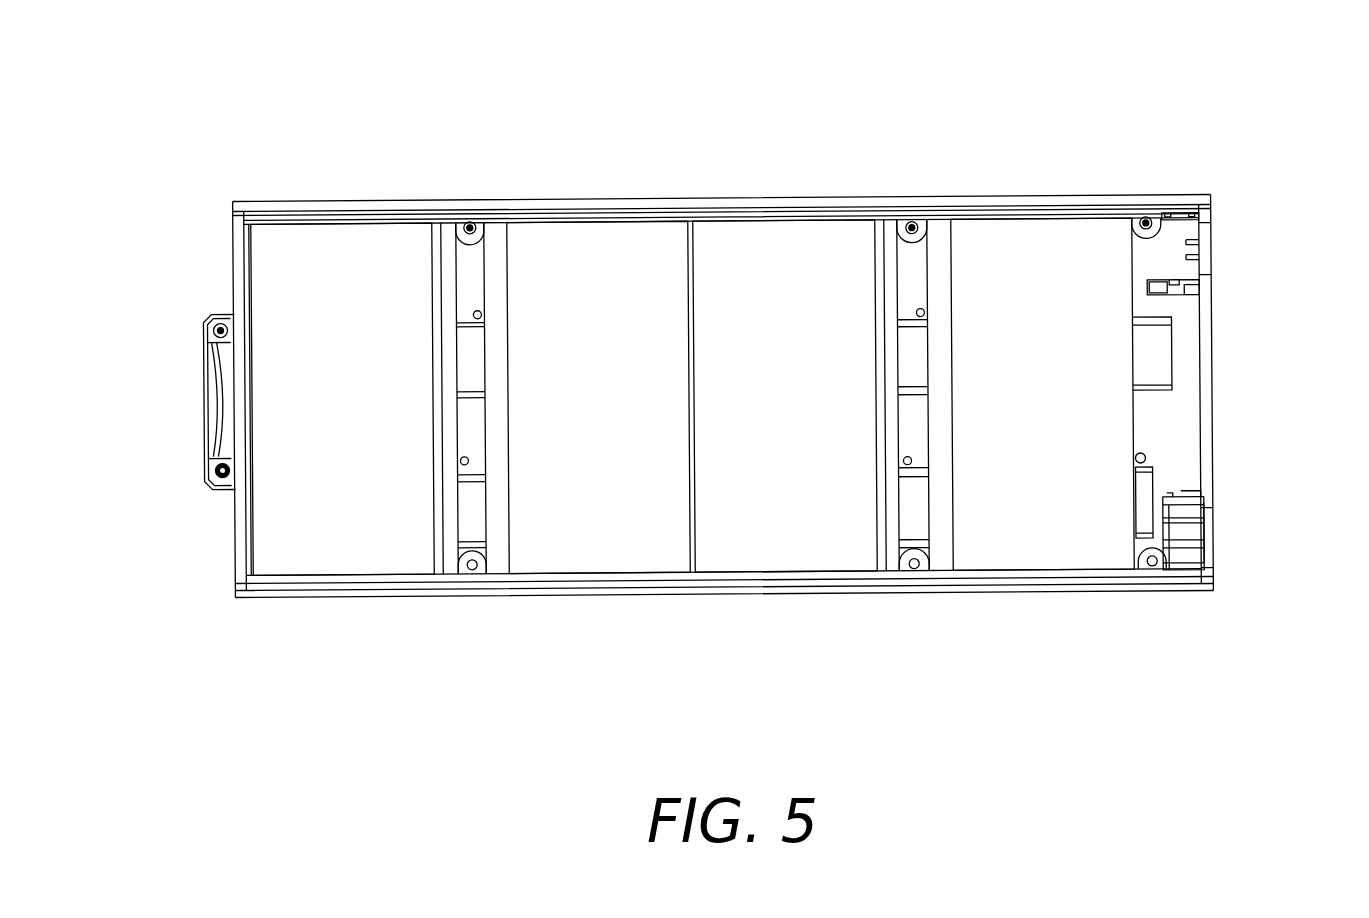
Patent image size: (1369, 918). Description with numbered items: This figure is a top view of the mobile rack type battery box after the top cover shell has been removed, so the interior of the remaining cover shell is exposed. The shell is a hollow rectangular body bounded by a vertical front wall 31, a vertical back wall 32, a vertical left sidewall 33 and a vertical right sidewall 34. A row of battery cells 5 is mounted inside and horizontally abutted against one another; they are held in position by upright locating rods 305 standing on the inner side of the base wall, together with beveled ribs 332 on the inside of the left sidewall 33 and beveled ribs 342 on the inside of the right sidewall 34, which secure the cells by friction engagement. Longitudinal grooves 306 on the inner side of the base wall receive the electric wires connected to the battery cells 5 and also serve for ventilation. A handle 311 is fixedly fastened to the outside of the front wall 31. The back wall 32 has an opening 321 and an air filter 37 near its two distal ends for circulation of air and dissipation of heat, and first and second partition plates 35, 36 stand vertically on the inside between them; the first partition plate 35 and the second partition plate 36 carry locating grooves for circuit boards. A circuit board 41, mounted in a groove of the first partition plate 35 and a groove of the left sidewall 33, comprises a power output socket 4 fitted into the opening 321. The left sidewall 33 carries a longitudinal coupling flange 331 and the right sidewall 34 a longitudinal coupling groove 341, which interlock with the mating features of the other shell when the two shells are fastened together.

The power output socket 4 is at (1186, 537).
The circuit board 41 is at (1163, 530).
The battery cells 5 is at (369, 250).
The vertical front wall 31 is at (237, 511).
The handle 311 is at (205, 360).
The vertical back wall 32 is at (1214, 391).
The opening 321 is at (1205, 523).
The vertical left sidewall 33 is at (777, 592).
The longitudinal coupling flange 331 is at (274, 586).
The beveled ribs 332 is at (656, 577).
The vertical right sidewall 34 is at (770, 197).
The longitudinal coupling groove 341 is at (270, 212).
The beveled ribs 342 is at (651, 218).
The upright locating rods 305 is at (481, 310).
The longitudinal grooves 306 is at (1156, 360).
The first partition plate 35 is at (1180, 495).
The second partition plate 36 is at (1180, 291).
The air filter 37 is at (1210, 247).